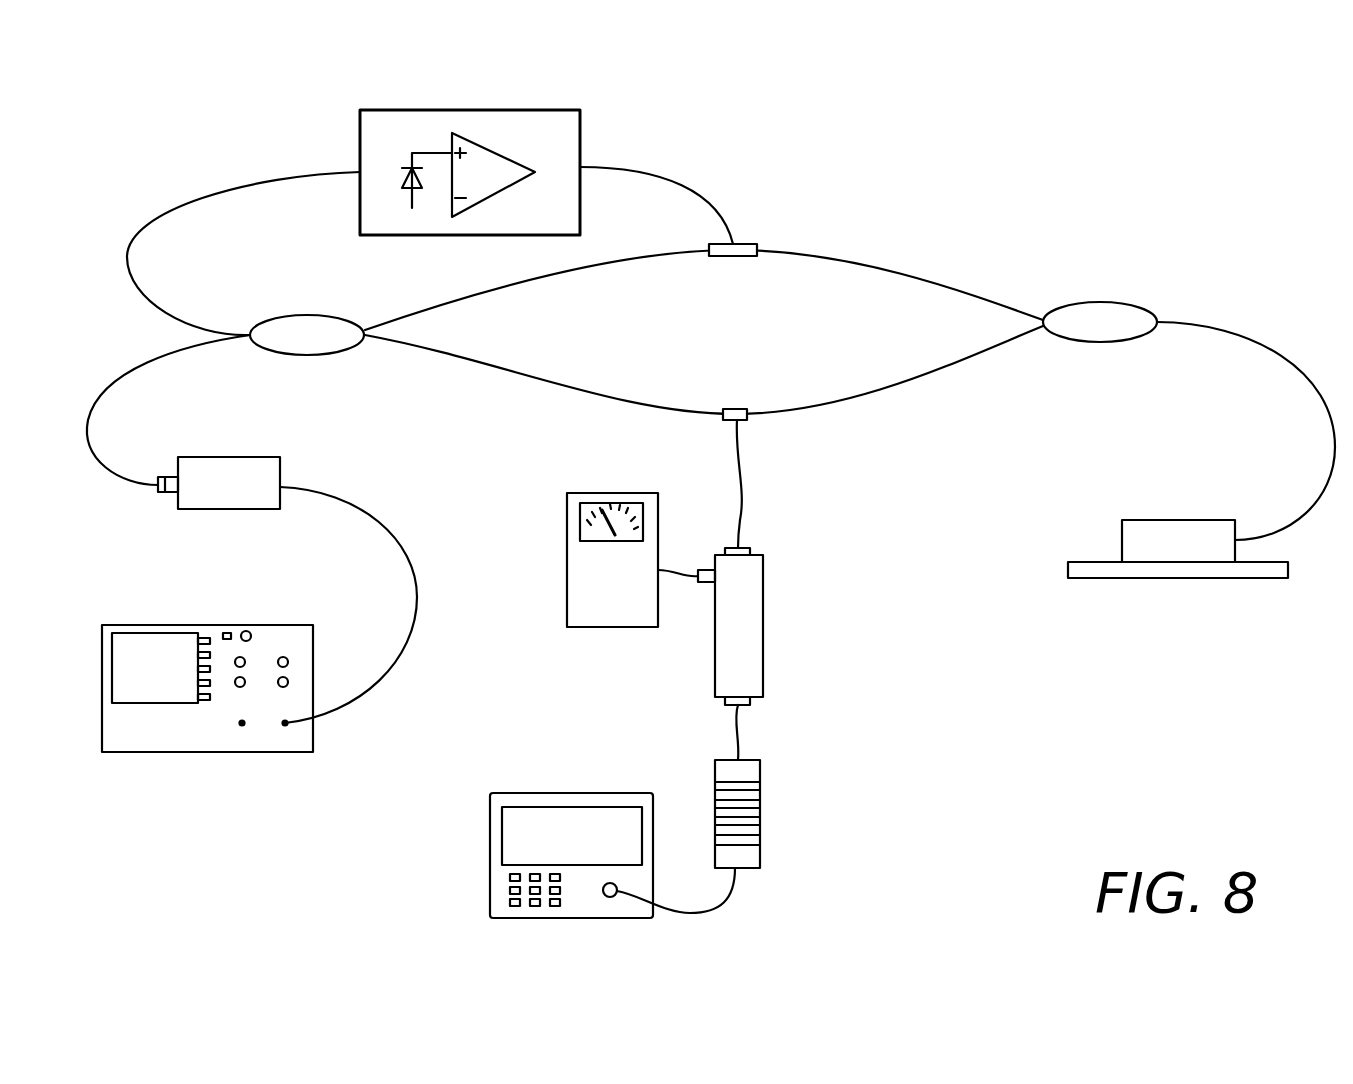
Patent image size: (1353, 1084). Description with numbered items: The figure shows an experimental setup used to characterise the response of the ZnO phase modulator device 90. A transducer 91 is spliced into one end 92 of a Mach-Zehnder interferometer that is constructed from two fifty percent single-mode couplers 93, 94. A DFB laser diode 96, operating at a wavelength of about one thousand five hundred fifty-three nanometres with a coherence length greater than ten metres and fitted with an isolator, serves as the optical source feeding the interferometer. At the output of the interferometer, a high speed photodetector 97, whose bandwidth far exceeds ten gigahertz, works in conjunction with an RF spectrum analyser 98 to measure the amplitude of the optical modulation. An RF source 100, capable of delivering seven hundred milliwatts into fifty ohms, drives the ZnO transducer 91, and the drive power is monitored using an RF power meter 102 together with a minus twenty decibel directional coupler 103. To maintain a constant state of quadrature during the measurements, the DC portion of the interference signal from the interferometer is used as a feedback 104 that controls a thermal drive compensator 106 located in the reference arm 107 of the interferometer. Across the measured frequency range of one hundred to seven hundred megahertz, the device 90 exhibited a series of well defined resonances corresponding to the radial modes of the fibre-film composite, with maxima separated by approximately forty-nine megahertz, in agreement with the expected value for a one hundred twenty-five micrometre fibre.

The device 90 is at (1135, 208).
The transducer 91 is at (738, 422).
The end of the Mach-Zehnder interferometer 92 is at (948, 357).
The single-mode coupler 93 is at (322, 347).
The single-mode coupler 94 is at (1113, 337).
The DFB laser diode 96 is at (1207, 578).
The photodetector 97 is at (212, 497).
The RF spectrum analyser 98 is at (192, 738).
The RF source 100 is at (760, 800).
The RF power meter 102 is at (603, 493).
The directional coupler 103 is at (763, 587).
The feedback 104 is at (580, 138).
The drive compensator 106 is at (746, 240).
The reference arm 107 is at (913, 283).